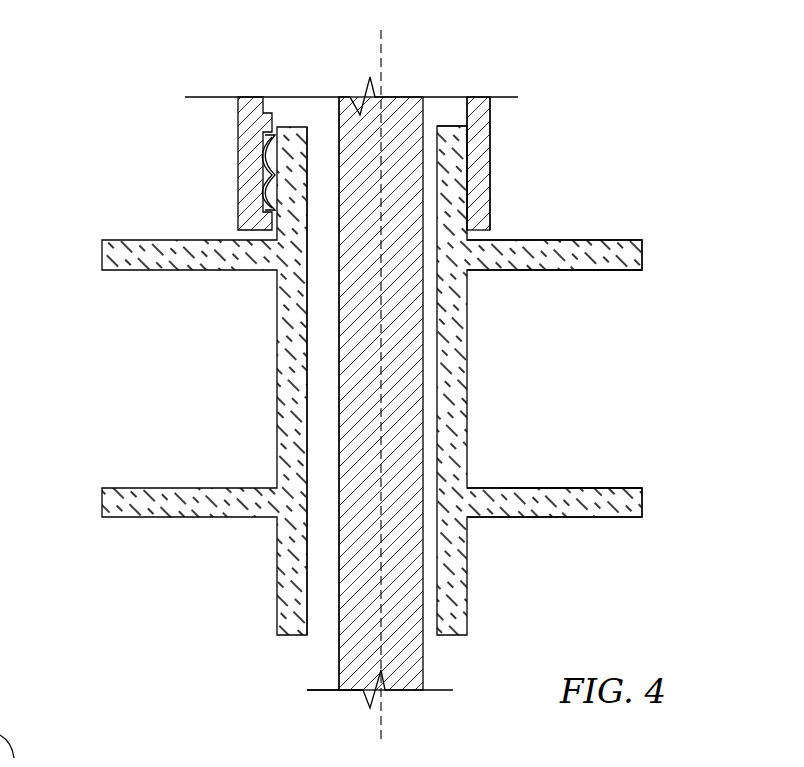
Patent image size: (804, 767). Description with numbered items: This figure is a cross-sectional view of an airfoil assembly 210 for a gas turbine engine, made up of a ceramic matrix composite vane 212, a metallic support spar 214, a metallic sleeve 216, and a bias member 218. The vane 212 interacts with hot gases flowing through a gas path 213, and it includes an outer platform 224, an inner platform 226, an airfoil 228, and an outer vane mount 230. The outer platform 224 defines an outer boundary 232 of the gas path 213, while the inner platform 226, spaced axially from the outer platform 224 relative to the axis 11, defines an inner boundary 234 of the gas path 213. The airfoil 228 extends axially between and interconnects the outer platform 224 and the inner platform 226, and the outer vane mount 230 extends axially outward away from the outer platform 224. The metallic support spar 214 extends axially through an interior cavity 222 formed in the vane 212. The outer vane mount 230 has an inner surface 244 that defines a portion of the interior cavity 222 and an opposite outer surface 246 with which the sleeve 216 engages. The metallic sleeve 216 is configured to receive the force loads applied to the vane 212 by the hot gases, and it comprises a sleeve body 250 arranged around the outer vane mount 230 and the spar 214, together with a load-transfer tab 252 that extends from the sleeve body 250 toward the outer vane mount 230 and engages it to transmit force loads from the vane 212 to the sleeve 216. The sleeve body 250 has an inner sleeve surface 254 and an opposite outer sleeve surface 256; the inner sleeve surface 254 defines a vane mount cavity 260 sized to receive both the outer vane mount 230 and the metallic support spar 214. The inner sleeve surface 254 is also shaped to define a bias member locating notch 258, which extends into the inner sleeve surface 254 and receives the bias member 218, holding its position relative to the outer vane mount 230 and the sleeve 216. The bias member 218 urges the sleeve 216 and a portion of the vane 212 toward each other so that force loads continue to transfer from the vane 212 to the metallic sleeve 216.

The airfoil assembly 210 is at (133, 126).
The ceramic matrix composite vane 212 is at (627, 358).
The gas path 213 is at (206, 390).
The metallic support spar 214 is at (405, 112).
The metallic sleeve 216 is at (514, 133).
The bias member 218 is at (273, 128).
The interior cavity 222 is at (318, 632).
The outer platform 224 is at (645, 238).
The inner platform 226 is at (644, 503).
The airfoil 228 is at (468, 352).
The outer vane mount 230 is at (443, 124).
The outer boundary 232 is at (612, 270).
The inner boundary 234 is at (606, 488).
The inner surface 244 is at (307, 165).
The outer surface 246 is at (467, 148).
The sleeve body 250 is at (238, 116).
The load-transfer tab 252 is at (492, 165).
The inner sleeve surface 254 is at (464, 201).
The outer sleeve surface 256 is at (492, 195).
The bias member locating notch 258 is at (299, 214).
The vane mount cavity 260 is at (323, 146).
The axis 11 is at (383, 660).